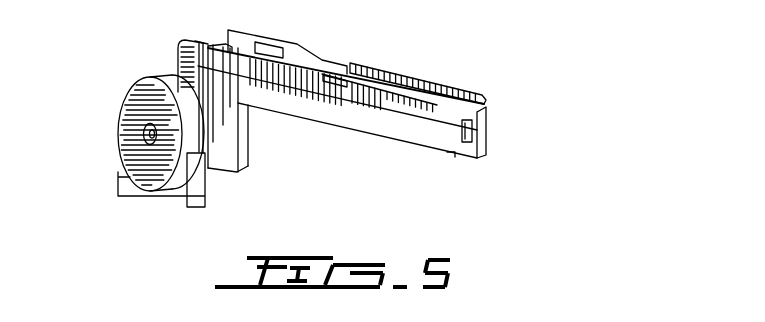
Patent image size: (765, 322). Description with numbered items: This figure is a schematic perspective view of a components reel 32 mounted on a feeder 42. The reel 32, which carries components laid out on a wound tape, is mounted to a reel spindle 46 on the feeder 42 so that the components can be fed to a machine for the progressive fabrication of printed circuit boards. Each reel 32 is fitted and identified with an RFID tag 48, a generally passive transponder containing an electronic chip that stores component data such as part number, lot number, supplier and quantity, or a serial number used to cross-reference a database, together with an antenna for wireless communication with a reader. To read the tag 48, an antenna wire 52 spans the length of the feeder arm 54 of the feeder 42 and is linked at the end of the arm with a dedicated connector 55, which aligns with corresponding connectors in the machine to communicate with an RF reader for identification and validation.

The feeder 42 is at (443, 63).
The components reel 32 is at (130, 90).
The reel spindle 46 is at (146, 134).
The RFID tag 48 is at (147, 140).
The antenna wire 52 is at (340, 106).
The feeder arm 54 is at (435, 143).
The dedicated connector 55 is at (468, 143).